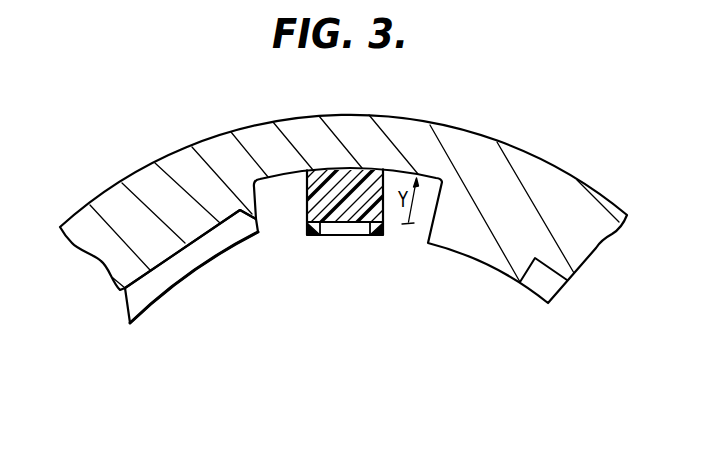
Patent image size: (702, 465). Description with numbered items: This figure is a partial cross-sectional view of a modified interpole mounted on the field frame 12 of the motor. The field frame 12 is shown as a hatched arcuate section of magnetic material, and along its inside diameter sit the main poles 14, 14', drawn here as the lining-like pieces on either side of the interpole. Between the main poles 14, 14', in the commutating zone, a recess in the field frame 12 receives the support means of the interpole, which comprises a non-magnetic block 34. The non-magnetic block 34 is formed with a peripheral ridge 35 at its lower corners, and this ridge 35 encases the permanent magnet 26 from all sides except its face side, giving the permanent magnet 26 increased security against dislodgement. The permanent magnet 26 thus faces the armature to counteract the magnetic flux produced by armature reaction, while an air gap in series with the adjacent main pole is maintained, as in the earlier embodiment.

The field frame 12 is at (507, 167).
The main pole 14 is at (185, 286).
The lining segment end block 14' is at (523, 302).
The non-magnetic block 34 is at (312, 207).
The permanent magnet 26 is at (348, 230).
The peripheral ridge 35 is at (310, 237).